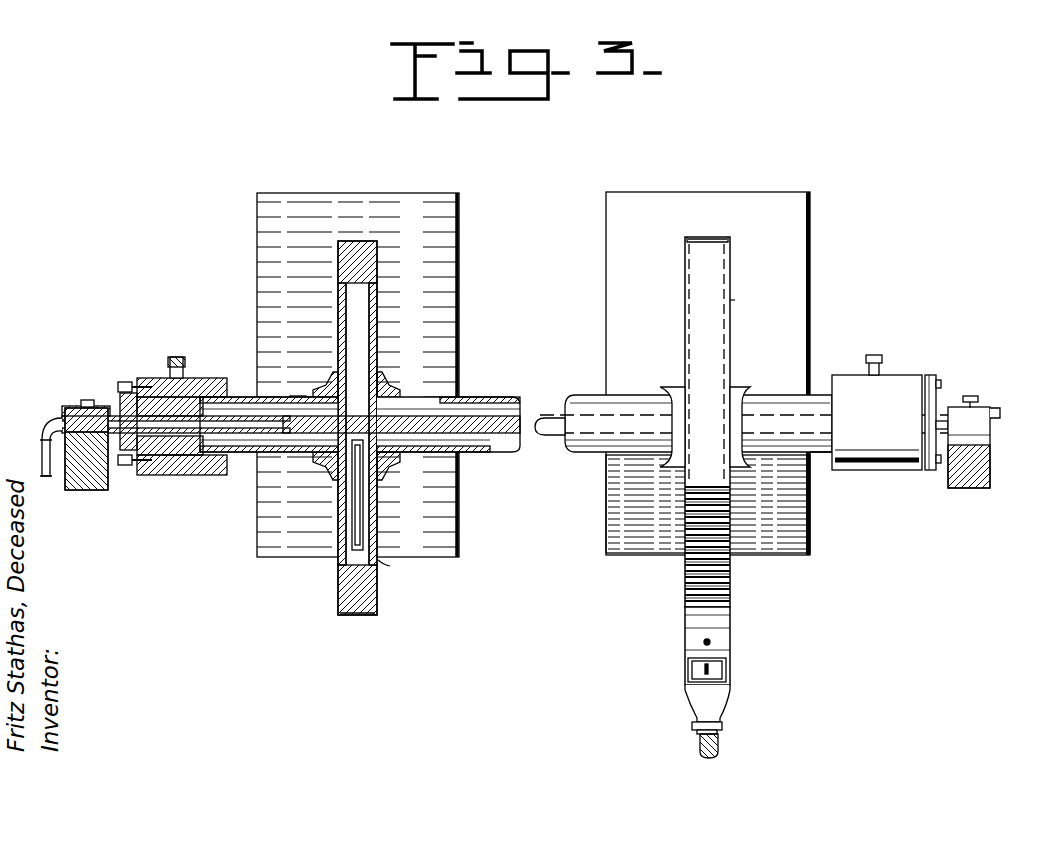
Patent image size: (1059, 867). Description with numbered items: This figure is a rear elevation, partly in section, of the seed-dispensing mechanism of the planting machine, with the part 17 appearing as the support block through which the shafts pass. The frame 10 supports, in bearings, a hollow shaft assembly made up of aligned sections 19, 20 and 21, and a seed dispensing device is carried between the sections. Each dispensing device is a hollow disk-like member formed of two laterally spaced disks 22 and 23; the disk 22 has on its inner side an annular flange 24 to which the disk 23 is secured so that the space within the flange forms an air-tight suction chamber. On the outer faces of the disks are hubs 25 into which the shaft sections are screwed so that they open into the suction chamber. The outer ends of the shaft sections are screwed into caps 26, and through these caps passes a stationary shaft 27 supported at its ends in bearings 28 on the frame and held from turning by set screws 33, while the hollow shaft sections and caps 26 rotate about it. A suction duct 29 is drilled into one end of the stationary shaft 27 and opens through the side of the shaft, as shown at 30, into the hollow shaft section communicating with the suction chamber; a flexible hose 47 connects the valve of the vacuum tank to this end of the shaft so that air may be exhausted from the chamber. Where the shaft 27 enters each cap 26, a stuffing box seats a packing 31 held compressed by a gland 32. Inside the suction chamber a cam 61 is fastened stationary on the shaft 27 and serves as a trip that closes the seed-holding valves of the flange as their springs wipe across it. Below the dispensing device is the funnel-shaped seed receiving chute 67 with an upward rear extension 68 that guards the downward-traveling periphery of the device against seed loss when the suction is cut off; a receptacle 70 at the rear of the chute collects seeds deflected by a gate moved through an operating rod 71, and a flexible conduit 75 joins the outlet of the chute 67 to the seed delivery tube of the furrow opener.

The frame 10 is at (98, 492).
The support block 17 is at (287, 195).
The hollow shaft section 19 is at (820, 463).
The hollow shaft section 20 is at (578, 455).
The hollow shaft section 21 is at (242, 395).
The disk 22 is at (348, 562).
The disk 23 is at (378, 585).
The annular flange 24 is at (357, 617).
The hub 25 is at (382, 388).
The cap 26 is at (155, 378).
The stationary shaft 27 is at (500, 408).
The bearing 28 is at (72, 406).
The suction duct 29 is at (248, 436).
The opening of suction duct 30 is at (297, 396).
The packing 31 is at (165, 456).
The gland 32 is at (128, 468).
The set screw 33 is at (92, 400).
The flexible hose 47 is at (43, 478).
The cam 61 is at (380, 560).
The seed receiving chute 67 is at (693, 700).
The upward rear extension 68 is at (730, 302).
The receptacle 70 is at (726, 670).
The operating rod 71 is at (710, 642).
The flexible conduit 75 is at (718, 745).